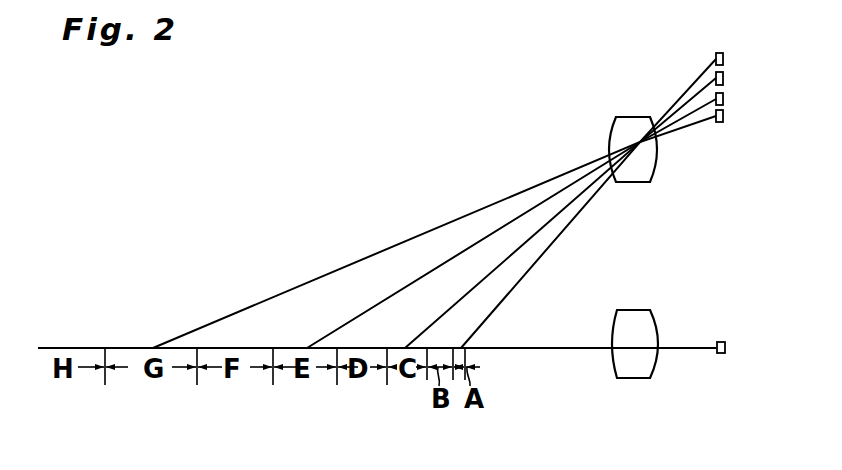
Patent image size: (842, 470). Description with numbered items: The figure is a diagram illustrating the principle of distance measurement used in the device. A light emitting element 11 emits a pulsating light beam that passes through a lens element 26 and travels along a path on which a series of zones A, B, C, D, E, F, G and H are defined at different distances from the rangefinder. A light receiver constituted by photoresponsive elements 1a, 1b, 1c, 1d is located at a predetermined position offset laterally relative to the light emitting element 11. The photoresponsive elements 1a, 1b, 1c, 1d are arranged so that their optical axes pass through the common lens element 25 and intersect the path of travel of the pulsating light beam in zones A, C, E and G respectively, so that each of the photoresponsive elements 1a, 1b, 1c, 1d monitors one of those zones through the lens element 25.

The photoresponsive element 1a is at (723, 55).
The photoresponsive element 1b is at (723, 76).
The photoresponsive element 1c is at (723, 98).
The photoresponsive element 1d is at (723, 117).
The lens element 25 is at (643, 164).
The lens element 26 is at (643, 323).
The light emitting element 11 is at (725, 347).